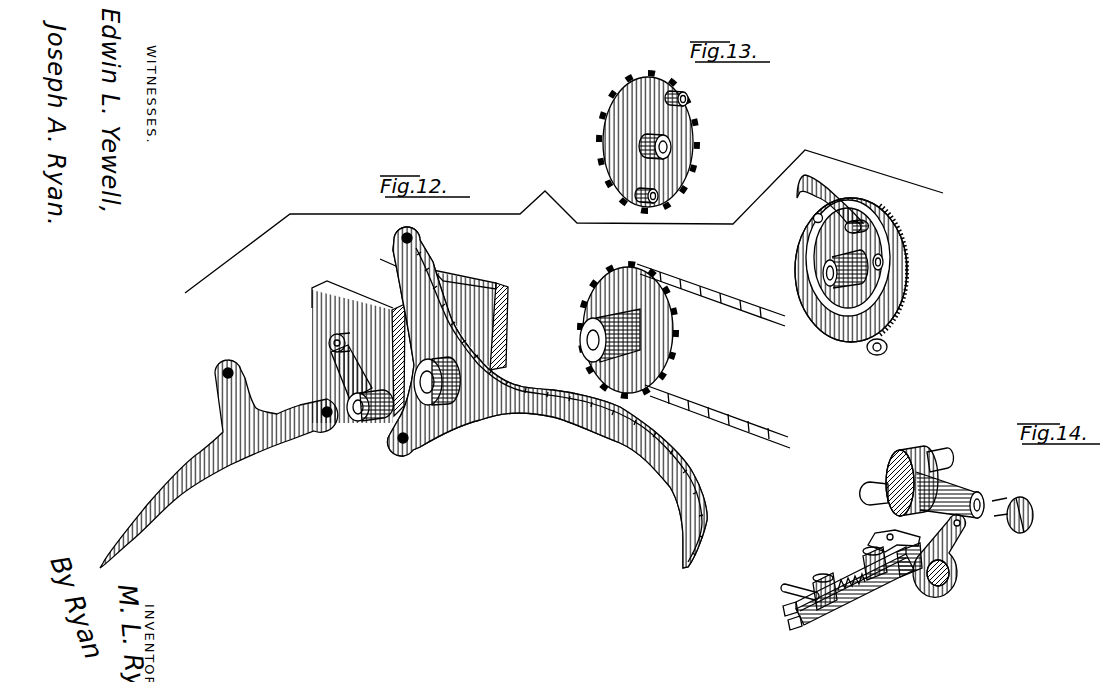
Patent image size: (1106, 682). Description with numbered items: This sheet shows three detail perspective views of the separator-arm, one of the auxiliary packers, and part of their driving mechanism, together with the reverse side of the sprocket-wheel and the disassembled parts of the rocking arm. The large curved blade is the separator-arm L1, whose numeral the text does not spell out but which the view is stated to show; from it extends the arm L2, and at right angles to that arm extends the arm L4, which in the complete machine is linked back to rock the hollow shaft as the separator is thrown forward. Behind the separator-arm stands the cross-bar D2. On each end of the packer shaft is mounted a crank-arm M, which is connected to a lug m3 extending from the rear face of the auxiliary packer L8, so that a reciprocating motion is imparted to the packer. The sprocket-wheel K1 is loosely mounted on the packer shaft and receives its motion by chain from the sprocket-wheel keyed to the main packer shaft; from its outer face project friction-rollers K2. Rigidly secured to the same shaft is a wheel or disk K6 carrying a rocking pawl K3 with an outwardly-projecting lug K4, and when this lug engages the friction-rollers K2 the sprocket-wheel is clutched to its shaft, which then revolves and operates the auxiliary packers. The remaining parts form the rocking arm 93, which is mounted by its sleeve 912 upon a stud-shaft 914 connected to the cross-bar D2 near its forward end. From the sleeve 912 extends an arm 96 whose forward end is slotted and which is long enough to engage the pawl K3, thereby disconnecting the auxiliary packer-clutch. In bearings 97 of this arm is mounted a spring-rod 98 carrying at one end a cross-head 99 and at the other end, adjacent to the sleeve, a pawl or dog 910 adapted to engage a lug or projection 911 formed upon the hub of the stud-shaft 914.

In FIG. 12, the lever L1 is at (548, 397).
In FIG. 12, the arm L2 is at (425, 245).
In FIG. 12, the arm L4 is at (415, 448).
In FIG. 12, the auxiliary packer L8 is at (219, 464).
In FIG. 12, the lug m3 is at (233, 405).
In FIG. 12, the crank-arm M is at (343, 360).
In FIG. 12, the cross-bar D2 is at (500, 303).
In FIG. 12, the sprocket-wheel K1 is at (675, 345).
In FIG. 13, the sprocket-wheel K1 is at (700, 135).
In FIG. 13, the friction-rollers K2 is at (692, 99).
In FIG. 13, the rocking pawl K3 is at (813, 187).
In FIG. 13, the lug K4 is at (877, 215).
In FIG. 13, the wheel or disk K6 is at (900, 258).
In FIG. 14, the lug or projection 911 is at (903, 463).
In FIG. 14, the stud-shaft 914 is at (963, 491).
In FIG. 14, the bearings 97 is at (820, 580).
In FIG. 14, the pawl or dog 910 is at (903, 535).
In FIG. 14, the rocking arm 93 is at (955, 543).
In FIG. 14, the cross-head 99 is at (786, 594).
In FIG. 14, the arm 96 is at (852, 602).
In FIG. 14, the spring-rod 98 is at (900, 573).
In FIG. 14, the sleeve 912 is at (940, 595).